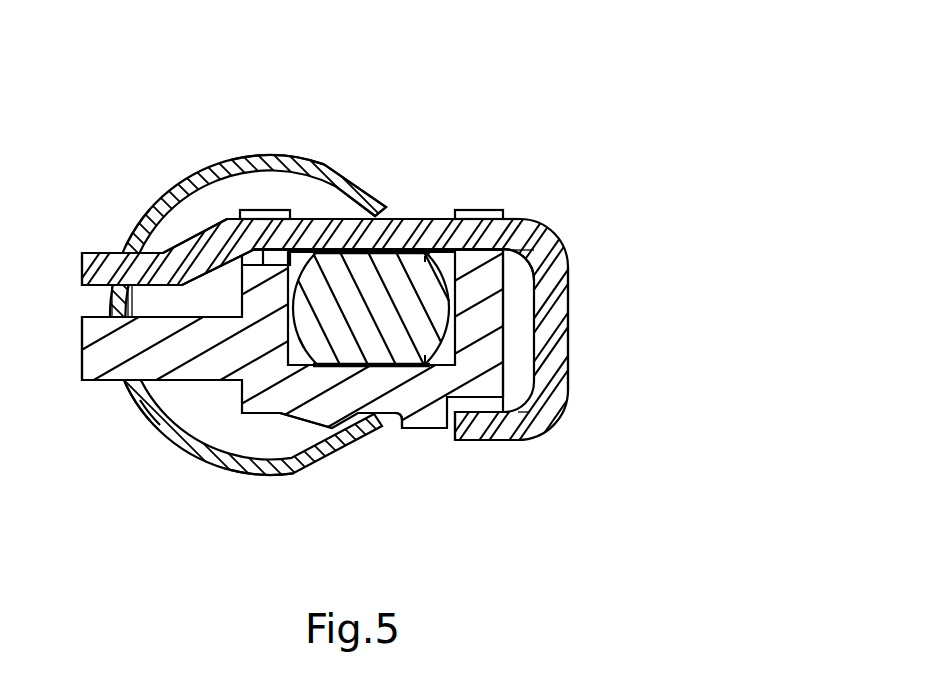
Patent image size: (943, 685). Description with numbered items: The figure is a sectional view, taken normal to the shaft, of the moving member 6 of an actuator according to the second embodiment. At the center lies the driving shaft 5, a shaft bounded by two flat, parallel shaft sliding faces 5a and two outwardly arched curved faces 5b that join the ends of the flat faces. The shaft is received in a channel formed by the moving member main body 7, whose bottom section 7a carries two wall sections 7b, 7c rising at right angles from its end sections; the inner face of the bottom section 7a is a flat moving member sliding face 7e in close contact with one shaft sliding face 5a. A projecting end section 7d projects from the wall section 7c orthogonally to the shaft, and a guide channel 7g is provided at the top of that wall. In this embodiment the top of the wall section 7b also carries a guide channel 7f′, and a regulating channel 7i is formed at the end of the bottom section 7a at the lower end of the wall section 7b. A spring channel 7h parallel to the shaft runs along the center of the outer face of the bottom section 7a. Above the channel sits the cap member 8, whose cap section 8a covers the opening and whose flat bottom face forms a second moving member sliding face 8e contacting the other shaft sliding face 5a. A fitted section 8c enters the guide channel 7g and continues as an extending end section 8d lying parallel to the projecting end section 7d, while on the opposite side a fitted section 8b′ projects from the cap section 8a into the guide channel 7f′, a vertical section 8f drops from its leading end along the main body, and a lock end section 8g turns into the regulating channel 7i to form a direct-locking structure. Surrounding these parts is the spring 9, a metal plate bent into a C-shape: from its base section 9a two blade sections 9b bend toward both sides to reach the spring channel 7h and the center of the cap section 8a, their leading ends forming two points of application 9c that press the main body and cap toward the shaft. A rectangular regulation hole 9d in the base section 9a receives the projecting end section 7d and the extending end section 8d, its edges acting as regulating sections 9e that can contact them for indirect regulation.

The driving shaft 5 is at (458, 309).
The shaft sliding face 5a is at (392, 220).
The curved face 5b is at (324, 250).
The moving member 6 is at (160, 164).
The moving member main body 7 is at (535, 385).
The bottom section 7a is at (276, 445).
The wall section 7b is at (481, 210).
The wall section 7c is at (265, 210).
The projecting end section 7d is at (82, 352).
The moving member sliding face 7e is at (507, 378).
The guide channel 7f′ is at (533, 230).
The guide channel 7g is at (138, 250).
The spring channel 7h is at (396, 432).
The regulating channel 7i is at (547, 428).
The cap member 8 is at (334, 213).
The cap section 8a is at (432, 218).
The fitted section 8b′ is at (497, 205).
The fitted section 8c is at (190, 215).
The extending end section 8d is at (112, 252).
The moving member sliding face 8e is at (530, 250).
The vertical section 8f is at (572, 290).
The lock end section 8g is at (470, 443).
The spring 9 is at (212, 170).
The base section 9a is at (113, 300).
The blade section 9b is at (253, 172).
The point of application 9c is at (375, 205).
The regulation hole 9d is at (127, 387).
The regulating section 9e is at (130, 232).